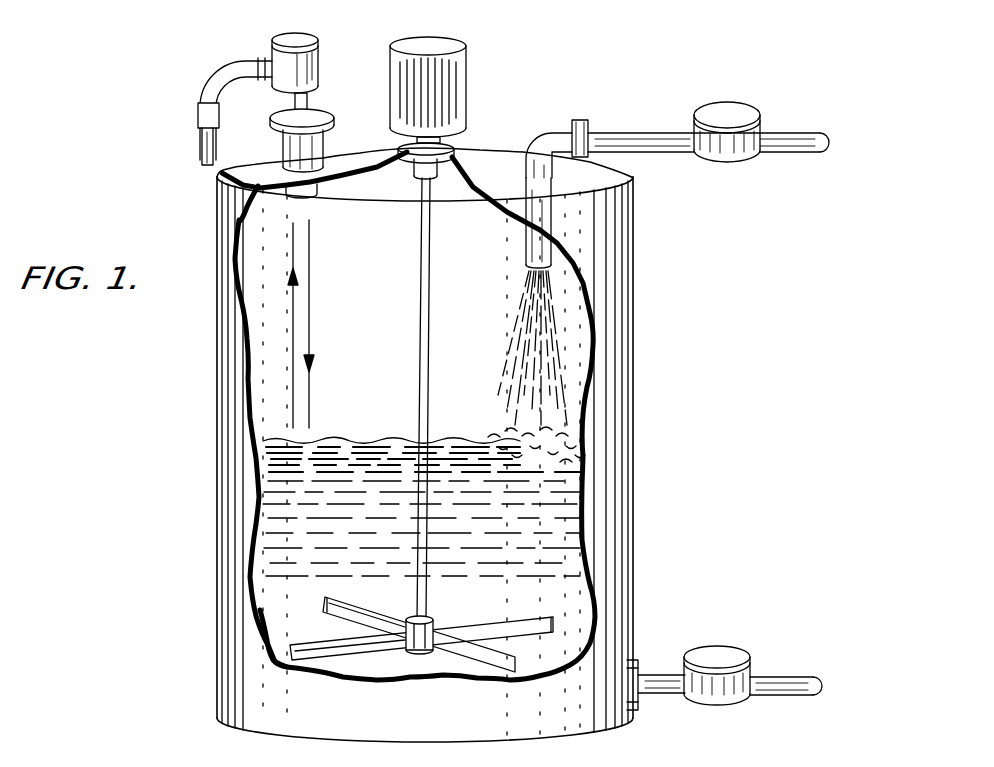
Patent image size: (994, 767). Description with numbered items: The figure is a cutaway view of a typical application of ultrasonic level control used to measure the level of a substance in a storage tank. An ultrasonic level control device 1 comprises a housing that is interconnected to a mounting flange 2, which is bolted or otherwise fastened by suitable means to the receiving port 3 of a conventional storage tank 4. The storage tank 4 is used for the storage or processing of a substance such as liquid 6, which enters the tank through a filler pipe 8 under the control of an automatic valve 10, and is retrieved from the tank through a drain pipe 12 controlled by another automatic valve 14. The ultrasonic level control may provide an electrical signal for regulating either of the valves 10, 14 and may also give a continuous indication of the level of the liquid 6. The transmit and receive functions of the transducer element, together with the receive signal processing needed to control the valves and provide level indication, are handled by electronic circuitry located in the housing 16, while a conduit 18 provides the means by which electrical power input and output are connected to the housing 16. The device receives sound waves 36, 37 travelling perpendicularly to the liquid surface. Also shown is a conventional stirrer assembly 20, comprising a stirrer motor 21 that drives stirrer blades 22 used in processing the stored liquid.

The ultrasonic level control device 1 is at (322, 62).
The mounting flange 2 is at (324, 112).
The receiving port 3 is at (284, 143).
The storage tank 4 is at (634, 362).
The liquid 6 is at (285, 440).
The filler pipe 8 is at (650, 132).
The automatic valve 10 is at (738, 108).
The drain pipe 12 is at (655, 675).
The automatic valve 14 is at (724, 652).
The housing 16 is at (272, 38).
The conduit 18 is at (222, 66).
The stirrer assembly 20 is at (432, 356).
The stirrer motor 21 is at (468, 80).
The stirrer blades 22 is at (516, 653).
The sound wave 36 is at (312, 259).
The sound wave 37 is at (292, 262).